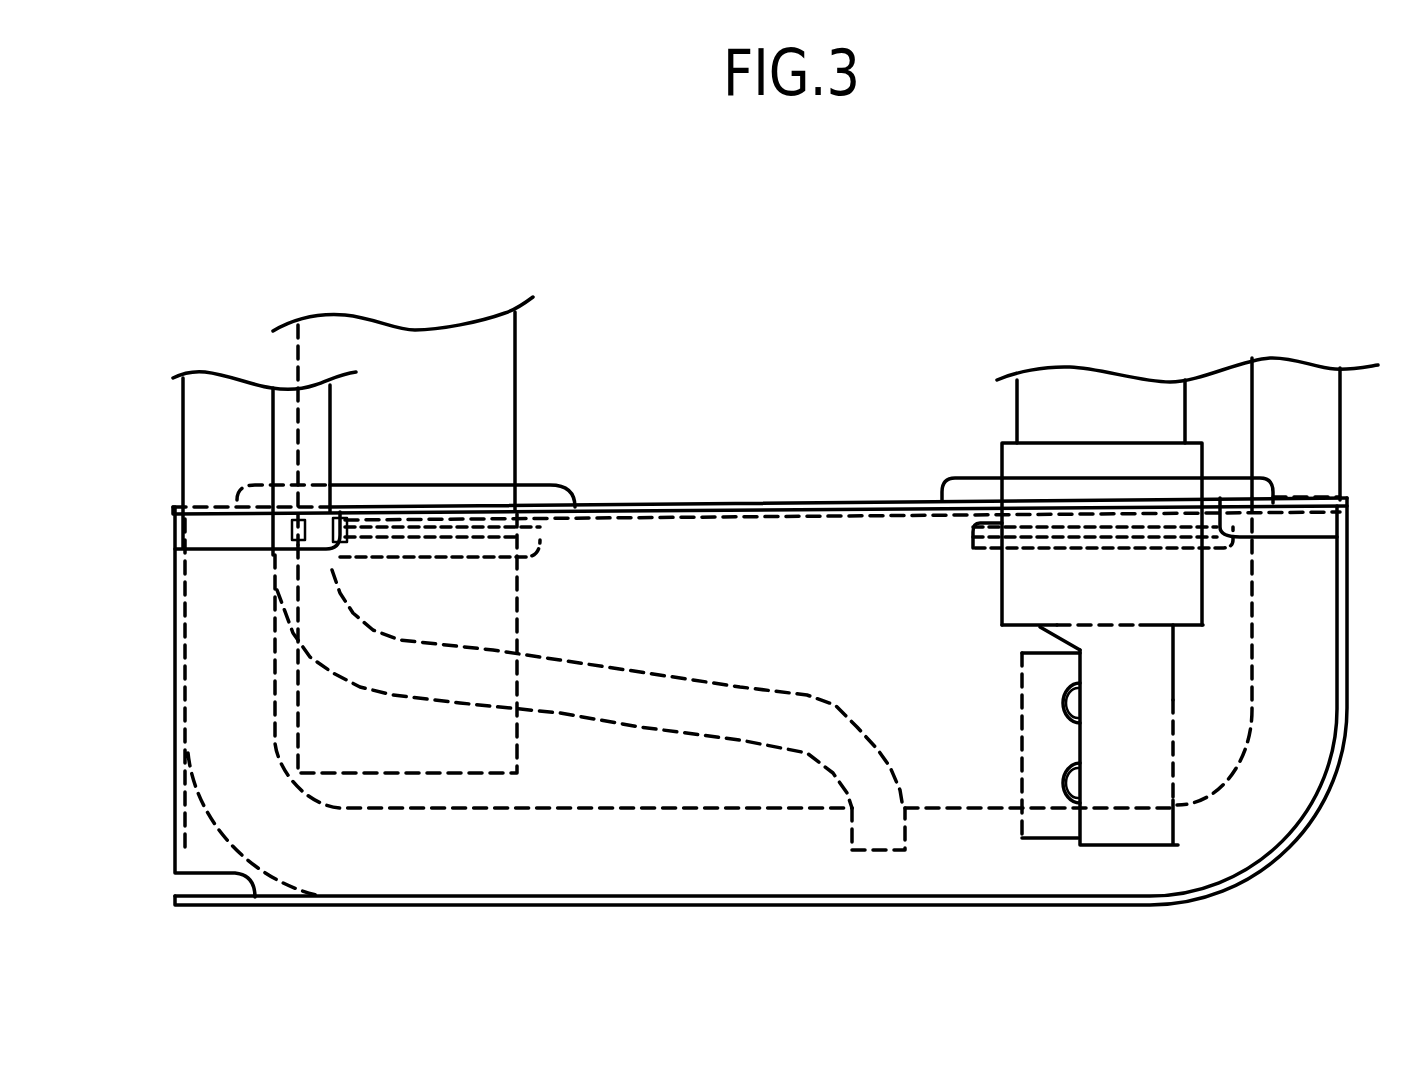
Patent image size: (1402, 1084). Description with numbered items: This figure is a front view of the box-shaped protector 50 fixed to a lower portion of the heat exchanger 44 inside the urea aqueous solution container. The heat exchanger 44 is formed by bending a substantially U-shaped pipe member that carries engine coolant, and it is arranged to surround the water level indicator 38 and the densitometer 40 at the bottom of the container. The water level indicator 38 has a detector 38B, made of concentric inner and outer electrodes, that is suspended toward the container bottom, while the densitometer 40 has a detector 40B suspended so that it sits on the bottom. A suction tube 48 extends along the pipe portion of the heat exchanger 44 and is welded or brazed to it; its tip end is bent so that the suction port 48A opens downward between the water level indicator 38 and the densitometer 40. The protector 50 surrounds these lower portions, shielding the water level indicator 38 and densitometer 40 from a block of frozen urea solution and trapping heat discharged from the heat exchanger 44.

The water level indicator 38 is at (540, 355).
The detector 38B is at (497, 602).
The densitometer 40 is at (1124, 394).
The detector 40B is at (1162, 782).
The heat exchanger 44 is at (200, 461).
The suction tube 48 is at (756, 677).
The suction port 48A is at (878, 851).
The protector 50 is at (177, 683).